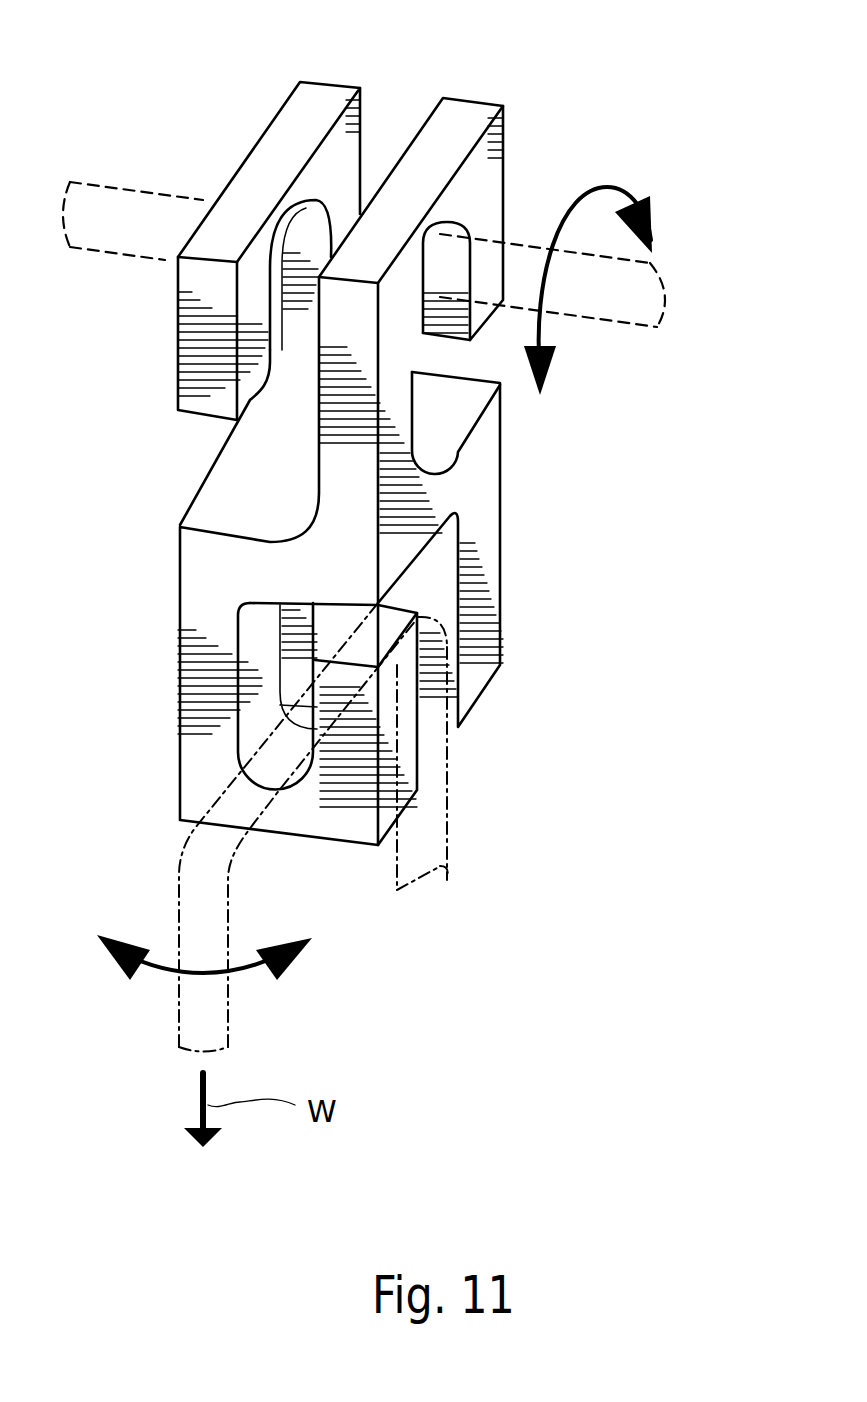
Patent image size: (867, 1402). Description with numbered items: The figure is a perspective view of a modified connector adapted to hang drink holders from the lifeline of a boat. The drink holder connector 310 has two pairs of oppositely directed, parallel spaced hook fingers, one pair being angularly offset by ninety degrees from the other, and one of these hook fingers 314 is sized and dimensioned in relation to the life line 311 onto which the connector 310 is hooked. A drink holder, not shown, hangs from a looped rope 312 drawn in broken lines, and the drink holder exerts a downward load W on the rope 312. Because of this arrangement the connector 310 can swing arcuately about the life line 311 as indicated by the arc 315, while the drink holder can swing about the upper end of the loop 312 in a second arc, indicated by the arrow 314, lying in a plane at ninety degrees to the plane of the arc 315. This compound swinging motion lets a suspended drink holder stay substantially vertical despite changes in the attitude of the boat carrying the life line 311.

The drink holder connector 310 is at (172, 603).
The life line 311 is at (667, 299).
The looped rope 312 is at (197, 918).
The hook finger 314 is at (305, 108).
The arc 315 is at (458, 118).